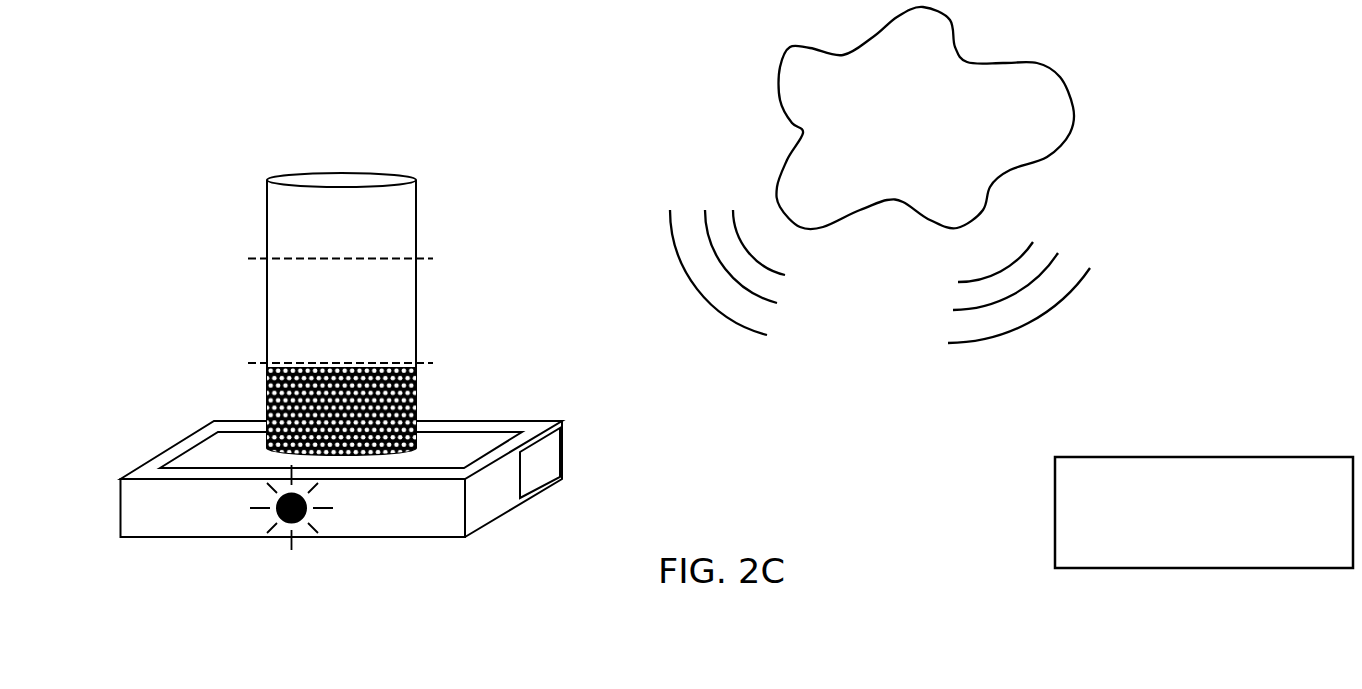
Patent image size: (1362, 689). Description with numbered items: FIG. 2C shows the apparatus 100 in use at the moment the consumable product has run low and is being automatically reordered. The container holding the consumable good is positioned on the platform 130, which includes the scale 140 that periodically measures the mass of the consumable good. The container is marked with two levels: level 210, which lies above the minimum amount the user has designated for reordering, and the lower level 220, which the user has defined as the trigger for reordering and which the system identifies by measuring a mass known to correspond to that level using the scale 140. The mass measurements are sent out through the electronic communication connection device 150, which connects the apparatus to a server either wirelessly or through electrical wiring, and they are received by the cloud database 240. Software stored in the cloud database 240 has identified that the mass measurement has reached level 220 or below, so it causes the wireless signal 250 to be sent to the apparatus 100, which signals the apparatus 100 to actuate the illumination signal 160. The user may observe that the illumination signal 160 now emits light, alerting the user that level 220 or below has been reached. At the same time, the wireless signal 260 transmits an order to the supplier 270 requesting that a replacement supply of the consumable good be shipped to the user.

The apparatus 100 is at (200, 104).
The platform 130 is at (148, 470).
The scale 140 is at (227, 455).
The electronic communication connection device 150 is at (542, 460).
The illumination signal 160 is at (283, 522).
The level 210 is at (424, 252).
The level 220 is at (424, 358).
The cloud database 240 is at (938, 142).
The wireless signal 250 is at (682, 267).
The wireless signal 260 is at (1082, 288).
The supplier 270 is at (1285, 457).